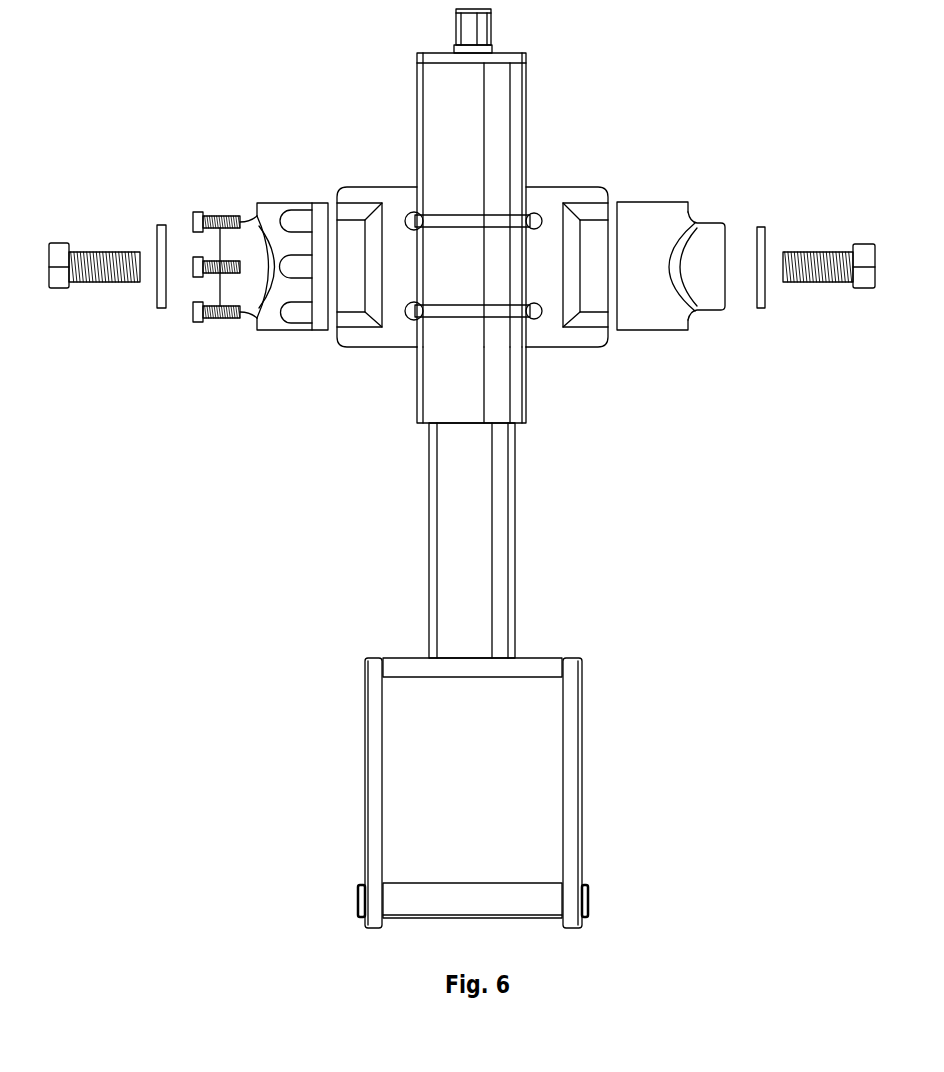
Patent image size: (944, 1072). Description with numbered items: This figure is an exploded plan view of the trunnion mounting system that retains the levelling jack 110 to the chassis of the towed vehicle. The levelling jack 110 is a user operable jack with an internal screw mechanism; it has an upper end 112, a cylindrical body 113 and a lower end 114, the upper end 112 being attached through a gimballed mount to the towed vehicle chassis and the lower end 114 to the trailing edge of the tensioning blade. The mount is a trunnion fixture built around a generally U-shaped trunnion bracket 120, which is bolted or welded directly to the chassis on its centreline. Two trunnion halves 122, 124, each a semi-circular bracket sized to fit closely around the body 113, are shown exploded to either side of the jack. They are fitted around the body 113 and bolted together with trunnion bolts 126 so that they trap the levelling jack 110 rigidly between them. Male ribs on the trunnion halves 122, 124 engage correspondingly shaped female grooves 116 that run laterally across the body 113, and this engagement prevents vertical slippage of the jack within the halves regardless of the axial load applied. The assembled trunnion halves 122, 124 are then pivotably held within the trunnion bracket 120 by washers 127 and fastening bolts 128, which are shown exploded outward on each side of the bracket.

The levelling jack 110 is at (517, 550).
The upper end 112 is at (527, 88).
The body 113 is at (527, 398).
The lower end 114 is at (363, 767).
The female grooves 116 is at (500, 313).
The trunnion bracket 120 is at (362, 185).
The trunnion half 122 is at (285, 332).
The trunnion half 124 is at (700, 222).
The trunnion bolts 126 is at (196, 225).
The washers 127 is at (160, 225).
The fastening bolts 128 is at (60, 243).